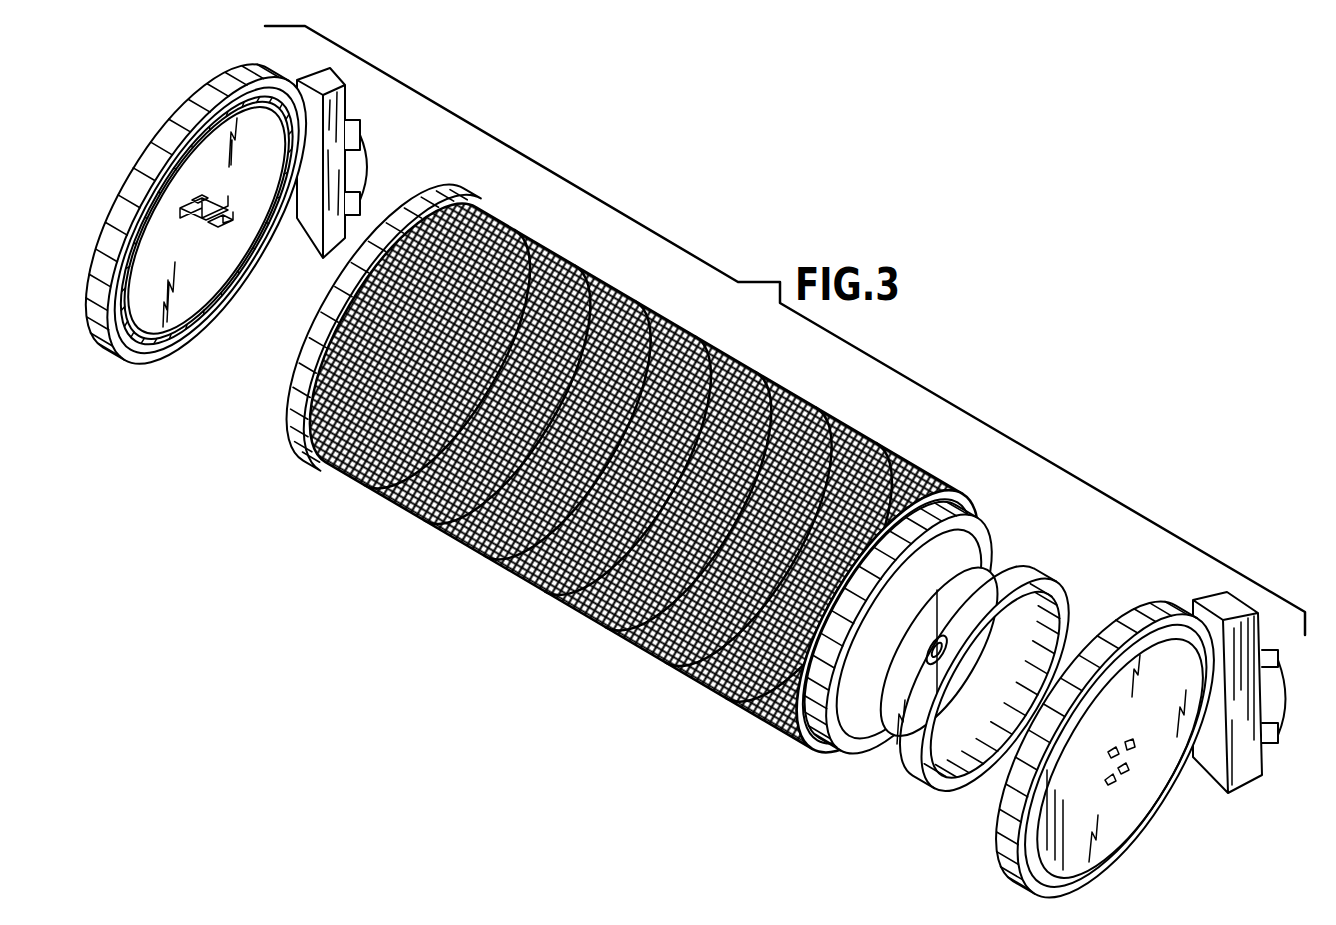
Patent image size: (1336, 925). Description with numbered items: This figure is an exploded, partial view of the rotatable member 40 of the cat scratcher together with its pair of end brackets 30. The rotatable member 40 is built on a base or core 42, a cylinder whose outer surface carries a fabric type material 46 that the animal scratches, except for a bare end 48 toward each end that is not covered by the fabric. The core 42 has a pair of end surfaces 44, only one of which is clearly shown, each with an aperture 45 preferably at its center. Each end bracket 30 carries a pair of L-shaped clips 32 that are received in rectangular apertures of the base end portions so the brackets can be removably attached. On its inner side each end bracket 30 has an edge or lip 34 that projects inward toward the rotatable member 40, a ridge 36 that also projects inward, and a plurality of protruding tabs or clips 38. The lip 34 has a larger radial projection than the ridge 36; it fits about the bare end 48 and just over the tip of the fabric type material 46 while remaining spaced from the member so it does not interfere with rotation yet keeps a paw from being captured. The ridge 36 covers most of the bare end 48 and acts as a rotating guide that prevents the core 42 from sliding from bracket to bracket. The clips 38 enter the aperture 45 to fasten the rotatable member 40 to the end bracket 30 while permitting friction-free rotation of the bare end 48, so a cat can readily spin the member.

The end bracket 30 is at (313, 160).
The clips 32 is at (358, 163).
The lip 34 is at (187, 140).
The ridge 36 is at (247, 280).
The clips 38 is at (213, 248).
The rotatable member 40 is at (593, 627).
The core 42 is at (1057, 580).
The end surfaces 44 is at (937, 708).
The aperture 45 is at (960, 642).
The fabric type material 46 is at (740, 343).
The bare end 48 is at (1013, 515).